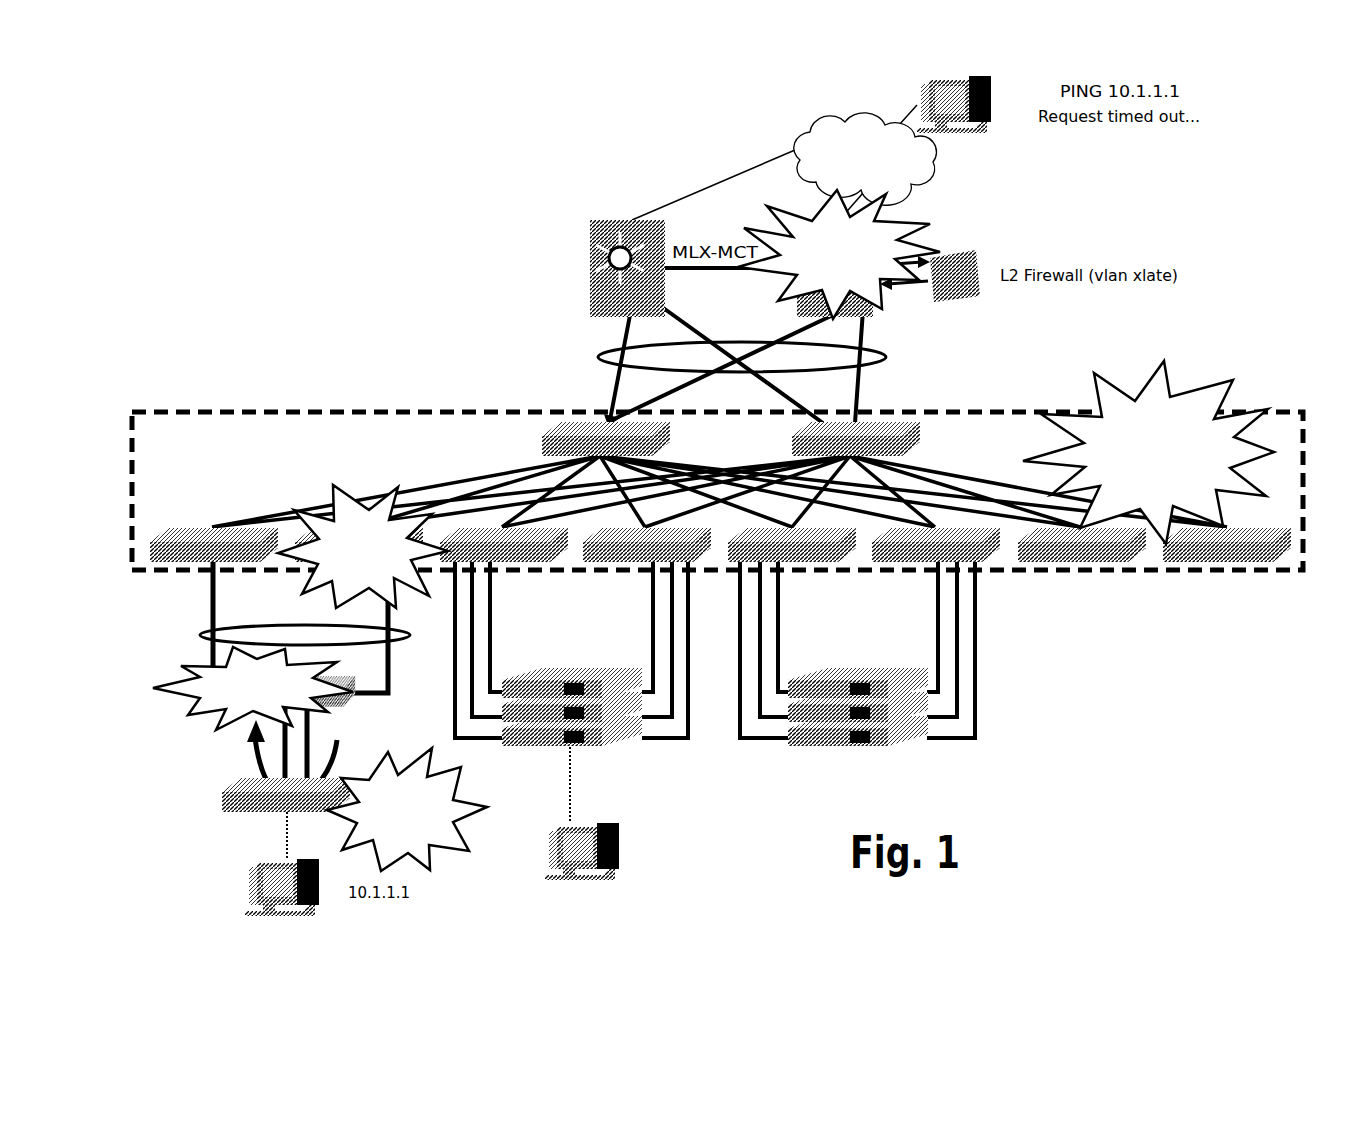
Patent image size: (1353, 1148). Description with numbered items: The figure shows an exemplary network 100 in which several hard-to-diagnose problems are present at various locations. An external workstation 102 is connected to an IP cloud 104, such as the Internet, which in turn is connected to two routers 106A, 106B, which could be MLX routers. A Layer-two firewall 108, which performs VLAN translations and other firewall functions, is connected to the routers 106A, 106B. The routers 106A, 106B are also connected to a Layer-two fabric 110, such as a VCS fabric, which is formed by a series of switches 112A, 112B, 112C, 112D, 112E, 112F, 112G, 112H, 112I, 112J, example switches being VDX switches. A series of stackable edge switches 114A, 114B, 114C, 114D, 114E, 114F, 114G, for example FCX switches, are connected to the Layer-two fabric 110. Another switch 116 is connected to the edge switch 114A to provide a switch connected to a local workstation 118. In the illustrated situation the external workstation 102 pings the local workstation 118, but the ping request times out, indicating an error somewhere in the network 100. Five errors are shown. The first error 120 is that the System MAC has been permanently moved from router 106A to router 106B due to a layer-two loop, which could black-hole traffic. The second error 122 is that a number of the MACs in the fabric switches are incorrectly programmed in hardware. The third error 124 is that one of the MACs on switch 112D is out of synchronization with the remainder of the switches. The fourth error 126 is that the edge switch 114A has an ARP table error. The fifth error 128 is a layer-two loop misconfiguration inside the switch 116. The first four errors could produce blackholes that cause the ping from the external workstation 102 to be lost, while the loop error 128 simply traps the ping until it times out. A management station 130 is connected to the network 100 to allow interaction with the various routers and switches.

The network 100 is at (281, 226).
The external workstation 102 is at (992, 120).
The IP cloud 104 is at (795, 134).
The router 106A is at (590, 265).
The router 106B is at (873, 296).
The Layer 2 firewall 108 is at (955, 256).
The Layer 2 fabric 110 is at (205, 411).
The switch 112A is at (545, 446).
The switch 112B is at (900, 452).
The switch 112C is at (165, 530).
The switch 112D is at (300, 562).
The switch 112E is at (497, 563).
The switch 112F is at (630, 563).
The switch 112G is at (788, 563).
The switch 112H is at (922, 563).
The switch 112I is at (1057, 563).
The switch 112J is at (1232, 563).
The stackable edge switch 114A is at (340, 702).
The stackable edge switch 114B is at (556, 668).
The stackable edge switch 114C is at (640, 700).
The stackable edge switch 114D is at (580, 746).
The stackable edge switch 114E is at (926, 676).
The stackable edge switch 114F is at (930, 700).
The stackable edge switch 114G is at (880, 746).
The switch 116 is at (240, 790).
The local workstation 118 is at (255, 870).
The first error 120 is at (800, 218).
The second error 122 is at (1068, 393).
The third error 124 is at (372, 498).
The fourth error 126 is at (188, 660).
The fifth error 128 is at (460, 780).
The management station 130 is at (557, 835).